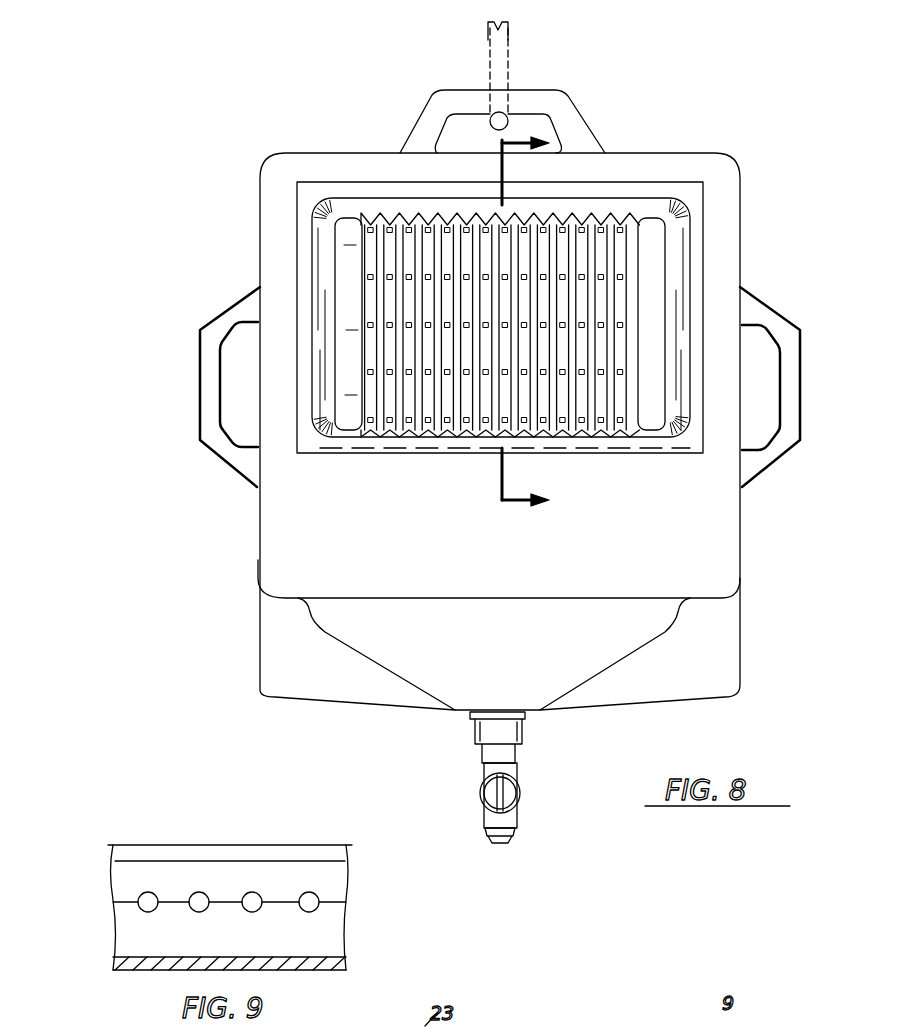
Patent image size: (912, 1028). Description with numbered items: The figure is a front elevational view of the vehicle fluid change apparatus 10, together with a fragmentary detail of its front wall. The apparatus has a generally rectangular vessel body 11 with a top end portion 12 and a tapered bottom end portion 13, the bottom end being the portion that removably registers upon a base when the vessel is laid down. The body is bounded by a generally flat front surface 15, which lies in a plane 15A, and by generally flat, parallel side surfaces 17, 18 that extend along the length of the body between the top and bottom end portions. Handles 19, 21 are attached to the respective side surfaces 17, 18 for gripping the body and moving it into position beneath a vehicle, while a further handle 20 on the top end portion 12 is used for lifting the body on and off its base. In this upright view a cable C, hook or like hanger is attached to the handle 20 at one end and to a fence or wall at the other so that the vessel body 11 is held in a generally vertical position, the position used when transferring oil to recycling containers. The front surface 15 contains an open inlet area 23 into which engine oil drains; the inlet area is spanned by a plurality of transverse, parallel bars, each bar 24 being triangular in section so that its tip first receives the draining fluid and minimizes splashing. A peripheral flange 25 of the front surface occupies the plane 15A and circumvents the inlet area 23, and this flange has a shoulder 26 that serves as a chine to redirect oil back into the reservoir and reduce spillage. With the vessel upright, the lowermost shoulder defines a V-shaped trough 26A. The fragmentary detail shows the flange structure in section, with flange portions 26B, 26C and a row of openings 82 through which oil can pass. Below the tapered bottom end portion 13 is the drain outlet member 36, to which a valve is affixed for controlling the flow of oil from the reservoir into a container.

In FIG. 8, the vehicle fluid change apparatus 10 is at (728, 74).
In FIG. 8, the vessel body 11 is at (272, 556).
In FIG. 8, the top end portion 12 is at (718, 153).
In FIG. 8, the bottom end portion 13 is at (488, 703).
In FIG. 8, the front surface 15 is at (402, 527).
In FIG. 8, the plane 15A is at (705, 536).
In FIG. 9, the plane 15A is at (150, 840).
In FIG. 8, the side surface 17 is at (260, 207).
In FIG. 8, the side surface 18 is at (742, 257).
In FIG. 8, the handle 19 is at (210, 428).
In FIG. 8, the handle 20 is at (535, 90).
In FIG. 8, the handle 21 is at (793, 345).
In FIG. 8, the inlet area 23 is at (638, 245).
In FIG. 8, the transverse bar 24 is at (452, 215).
In FIG. 8, the peripheral flange 25 is at (280, 270).
In FIG. 8, the shoulder 26 is at (330, 212).
In FIG. 9, the trough 26A is at (106, 922).
In FIG. 9, the flange 26B is at (328, 878).
In FIG. 9, the flange 26C is at (325, 928).
In FIG. 8, the drain outlet member 36 is at (522, 722).
In FIG. 9, the openings 82 is at (318, 888).
In FIG. 8, the cable C is at (472, 62).